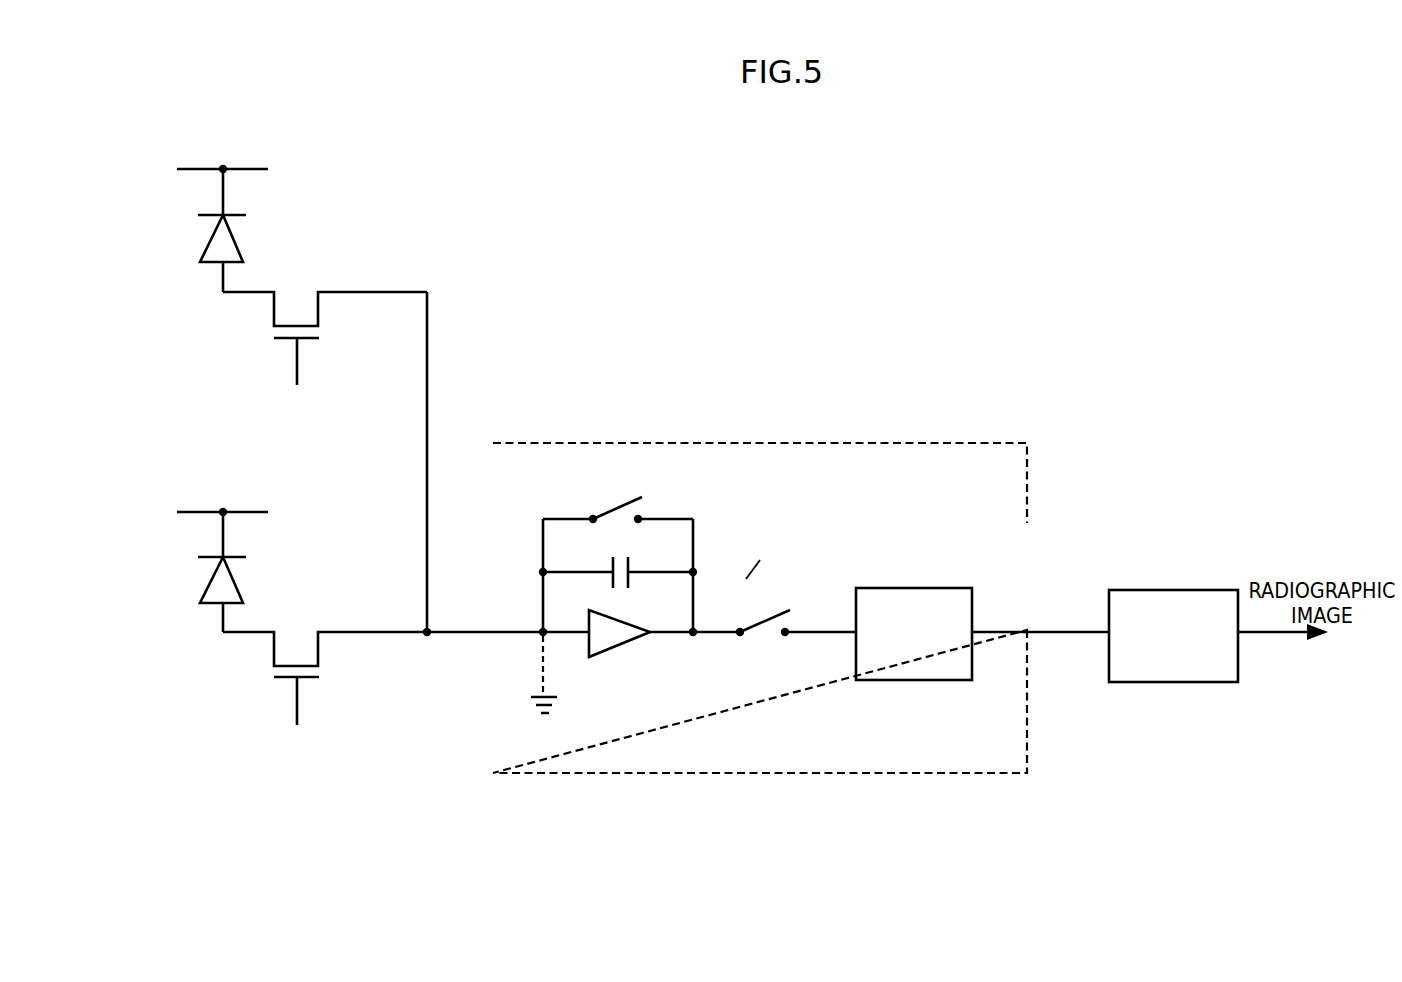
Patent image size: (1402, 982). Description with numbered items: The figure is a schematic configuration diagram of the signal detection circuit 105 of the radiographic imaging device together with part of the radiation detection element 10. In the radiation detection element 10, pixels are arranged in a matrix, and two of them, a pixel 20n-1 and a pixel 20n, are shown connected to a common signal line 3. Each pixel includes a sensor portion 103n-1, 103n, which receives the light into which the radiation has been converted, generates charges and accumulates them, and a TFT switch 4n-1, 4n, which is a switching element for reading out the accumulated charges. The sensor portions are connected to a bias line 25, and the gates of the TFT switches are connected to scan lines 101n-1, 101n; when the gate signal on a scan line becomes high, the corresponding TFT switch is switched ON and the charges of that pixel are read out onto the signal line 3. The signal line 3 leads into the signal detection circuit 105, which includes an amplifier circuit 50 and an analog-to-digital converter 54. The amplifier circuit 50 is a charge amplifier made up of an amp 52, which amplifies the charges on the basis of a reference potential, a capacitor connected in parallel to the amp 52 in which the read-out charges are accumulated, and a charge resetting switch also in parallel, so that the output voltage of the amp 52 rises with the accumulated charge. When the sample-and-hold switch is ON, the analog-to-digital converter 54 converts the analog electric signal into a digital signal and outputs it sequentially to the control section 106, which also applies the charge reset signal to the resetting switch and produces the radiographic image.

The radiation detection element 10 is at (472, 163).
The pixel 20n-1 is at (260, 301).
The pixel 20n is at (260, 582).
The bias line 25 is at (240, 168).
The sensor portion 103n-1 is at (207, 247).
The sensor portion 103n is at (207, 587).
The TFT switch 4n-1 is at (278, 339).
The TFT switch 4n is at (278, 678).
The scan line 101n-1 is at (297, 370).
The scan line 101n is at (297, 712).
The signal line 3 is at (488, 630).
The signal detection circuit 105 is at (987, 443).
The amplifier circuit 50 is at (655, 604).
The amp 52 is at (613, 648).
The analog-to-digital converter (ADC) 54 is at (932, 588).
The control section 106 is at (1198, 590).